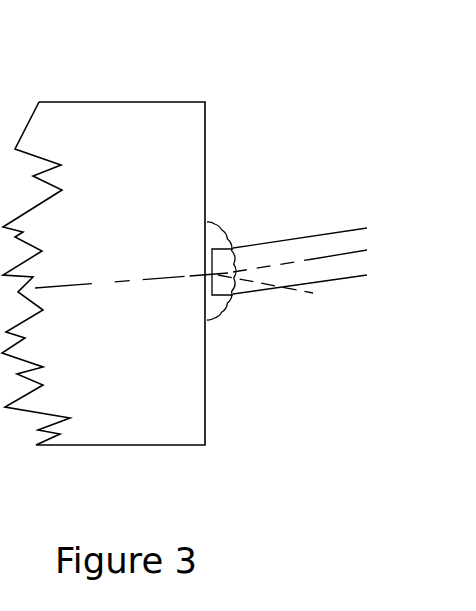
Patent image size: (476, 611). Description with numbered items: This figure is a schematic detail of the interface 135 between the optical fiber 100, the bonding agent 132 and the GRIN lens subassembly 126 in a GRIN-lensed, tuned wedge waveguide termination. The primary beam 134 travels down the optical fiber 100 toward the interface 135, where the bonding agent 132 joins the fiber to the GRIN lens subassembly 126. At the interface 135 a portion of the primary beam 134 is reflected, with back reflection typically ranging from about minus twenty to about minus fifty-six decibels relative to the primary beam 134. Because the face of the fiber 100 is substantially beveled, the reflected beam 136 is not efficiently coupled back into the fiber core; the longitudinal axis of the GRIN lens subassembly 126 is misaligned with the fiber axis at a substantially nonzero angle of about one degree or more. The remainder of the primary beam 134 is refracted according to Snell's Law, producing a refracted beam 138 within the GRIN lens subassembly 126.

The GRIN lens subassembly 126 is at (228, 70).
The interface 135 is at (207, 222).
The bonding agent 132 is at (223, 313).
The optical fiber 100 is at (348, 228).
The primary beam 134 is at (325, 258).
The reflected beam 136 is at (285, 287).
The refracted beam 138 is at (92, 285).